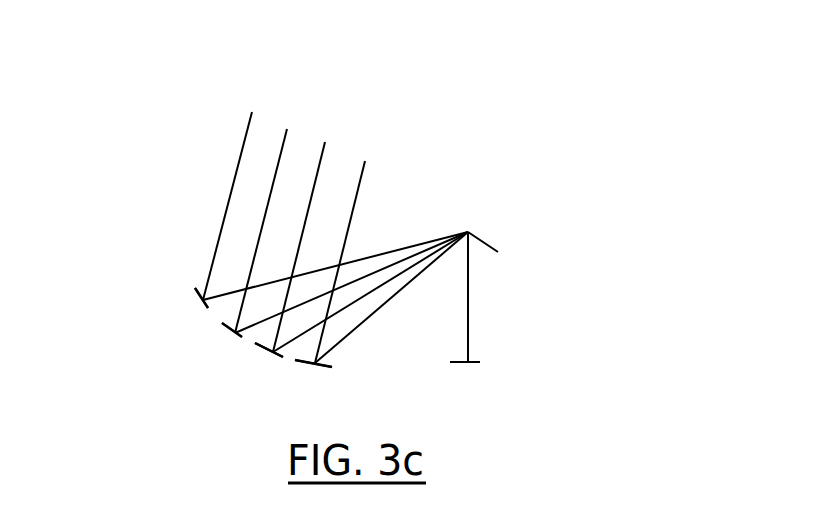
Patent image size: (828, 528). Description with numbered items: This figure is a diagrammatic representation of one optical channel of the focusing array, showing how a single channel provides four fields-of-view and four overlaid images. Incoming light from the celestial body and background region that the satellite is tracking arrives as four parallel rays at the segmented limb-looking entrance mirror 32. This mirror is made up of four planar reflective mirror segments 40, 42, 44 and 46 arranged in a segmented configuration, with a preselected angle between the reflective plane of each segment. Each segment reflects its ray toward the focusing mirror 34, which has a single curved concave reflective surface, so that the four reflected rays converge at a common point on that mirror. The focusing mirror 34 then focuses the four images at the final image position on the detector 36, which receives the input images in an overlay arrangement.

The limb-looking entrance mirror 32 is at (182, 268).
The focusing mirror 34 is at (492, 234).
The detector 36 is at (468, 368).
The planar reflective mirror segment 40 is at (194, 303).
The planar reflective mirror segment 42 is at (232, 339).
The planar reflective mirror segment 44 is at (271, 358).
The planar reflective mirror segment 46 is at (304, 374).